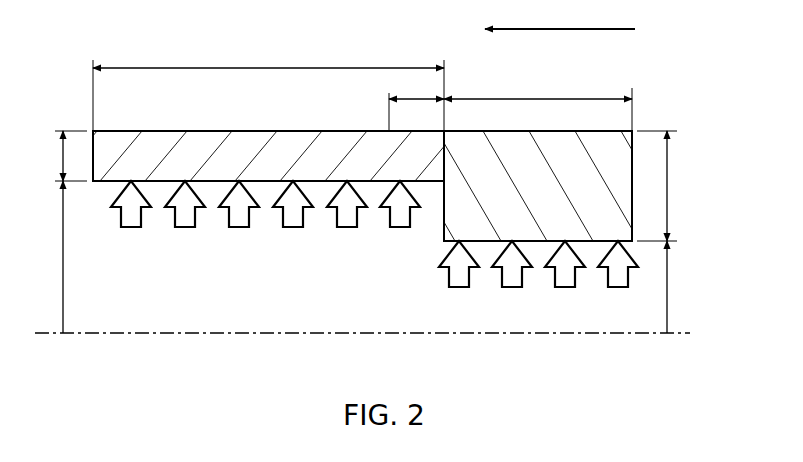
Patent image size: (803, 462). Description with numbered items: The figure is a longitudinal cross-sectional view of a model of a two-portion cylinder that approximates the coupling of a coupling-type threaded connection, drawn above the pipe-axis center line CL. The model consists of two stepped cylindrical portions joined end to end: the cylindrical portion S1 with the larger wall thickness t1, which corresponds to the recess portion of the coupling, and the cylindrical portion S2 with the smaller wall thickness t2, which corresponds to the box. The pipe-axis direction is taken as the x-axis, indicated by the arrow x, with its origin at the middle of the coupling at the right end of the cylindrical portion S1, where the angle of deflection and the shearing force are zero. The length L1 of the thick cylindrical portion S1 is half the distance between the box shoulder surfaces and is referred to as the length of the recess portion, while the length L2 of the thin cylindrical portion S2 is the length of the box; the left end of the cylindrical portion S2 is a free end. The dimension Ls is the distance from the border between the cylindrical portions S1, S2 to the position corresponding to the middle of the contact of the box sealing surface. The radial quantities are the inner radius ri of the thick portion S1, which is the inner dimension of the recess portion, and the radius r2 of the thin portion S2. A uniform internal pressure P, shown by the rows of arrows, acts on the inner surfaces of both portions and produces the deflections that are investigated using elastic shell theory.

The cylindrical portion with smaller wall thickness S2 is at (102, 163).
The cylindrical portion with larger wall thickness S1 is at (468, 218).
The internal pressure P is at (374, 247).
The center line CL is at (383, 333).
The length of the box L2 is at (268, 87).
The length of the recess portion L1 is at (538, 103).
The distance between border of cylindrical portions and middle of box sealing surfac Ls is at (416, 104).
The x-axis x is at (560, 16).
The wall thickness of the smaller-thickness cylindrical portion t2 is at (62, 156).
The median radius of the smaller-thickness cylindrical portion r2 is at (49, 257).
The wall thickness of the larger-thickness cylindrical portion t1 is at (663, 186).
The inner diameter of the recess portion ri is at (677, 287).